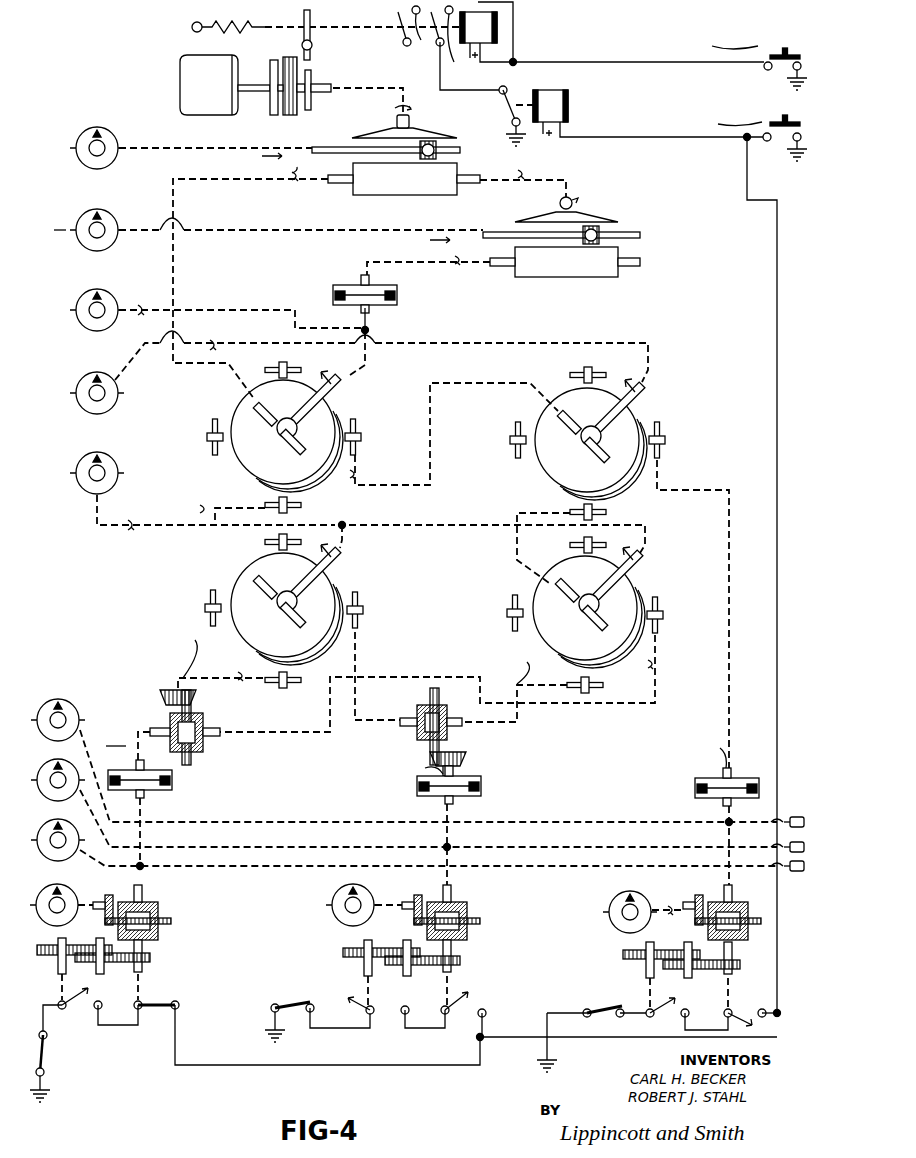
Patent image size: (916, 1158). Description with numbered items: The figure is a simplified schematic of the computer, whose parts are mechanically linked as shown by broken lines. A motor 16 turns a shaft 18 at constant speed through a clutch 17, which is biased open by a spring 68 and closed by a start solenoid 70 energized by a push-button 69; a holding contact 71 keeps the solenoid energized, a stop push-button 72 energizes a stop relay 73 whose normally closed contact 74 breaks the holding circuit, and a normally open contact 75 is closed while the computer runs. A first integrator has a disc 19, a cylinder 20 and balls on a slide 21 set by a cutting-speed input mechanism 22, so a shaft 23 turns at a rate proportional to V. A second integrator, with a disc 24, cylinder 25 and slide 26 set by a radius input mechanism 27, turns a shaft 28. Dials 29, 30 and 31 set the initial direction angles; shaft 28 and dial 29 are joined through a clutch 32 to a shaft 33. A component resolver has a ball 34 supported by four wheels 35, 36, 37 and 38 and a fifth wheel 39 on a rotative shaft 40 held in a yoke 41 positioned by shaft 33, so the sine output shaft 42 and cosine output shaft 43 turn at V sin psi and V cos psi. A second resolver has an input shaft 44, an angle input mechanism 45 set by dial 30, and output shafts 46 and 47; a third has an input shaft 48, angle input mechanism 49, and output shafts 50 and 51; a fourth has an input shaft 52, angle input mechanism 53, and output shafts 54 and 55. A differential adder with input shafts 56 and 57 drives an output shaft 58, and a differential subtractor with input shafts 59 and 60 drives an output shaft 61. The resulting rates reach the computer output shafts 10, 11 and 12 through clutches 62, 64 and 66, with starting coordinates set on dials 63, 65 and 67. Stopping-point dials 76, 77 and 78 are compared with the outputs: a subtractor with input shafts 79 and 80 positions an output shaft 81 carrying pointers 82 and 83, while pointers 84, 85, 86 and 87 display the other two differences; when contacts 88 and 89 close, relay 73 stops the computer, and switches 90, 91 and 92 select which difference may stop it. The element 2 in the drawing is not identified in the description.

The Z differential 2 is at (119, 932).
The computer output shaft 10 is at (790, 813).
The computer output shaft 11 is at (795, 839).
The output shaft 12 is at (794, 876).
The motor 16 is at (218, 95).
The clutch 17 is at (272, 108).
The shaft 18 is at (318, 84).
The disc 19 is at (417, 128).
The cylinder 20 is at (415, 196).
The slide 21 is at (489, 154).
The input mechanism 22 is at (111, 144).
The shaft 23 is at (338, 186).
The disc 24 is at (590, 216).
The cylinder 25 is at (582, 276).
The slide 26 is at (626, 236).
The input mechanism 27 is at (111, 226).
The shaft 28 is at (504, 268).
The dial 29 is at (111, 306).
The dial 30 is at (120, 376).
The dial 31 is at (100, 454).
The clutch 32 is at (352, 284).
The shaft 33 is at (362, 316).
The ball 34 is at (238, 480).
The wheel 35 is at (214, 426).
The wheel 36 is at (281, 368).
The wheel 37 is at (361, 438).
The wheel 38 is at (306, 511).
The fifth wheel 39 is at (286, 452).
The rotative shaft 40 is at (270, 442).
The yoke 41 is at (308, 415).
The sine output shaft 42 is at (272, 508).
The cosine output shaft 43 is at (363, 448).
The input shaft 44 is at (570, 438).
The angle input mechanism 45 is at (612, 422).
The sine output shaft 46 is at (604, 516).
The cosine output shaft 47 is at (665, 440).
The input shaft 48 is at (268, 606).
The angle input mechanism 49 is at (306, 588).
The sine output shaft 50 is at (283, 684).
The cosine output shaft 51 is at (360, 608).
The input shaft 52 is at (568, 612).
The angle input mechanism 53 is at (607, 590).
The sine output shaft 54 is at (572, 688).
The cosine output shaft 55 is at (660, 608).
The input shaft 56 is at (416, 710).
The input shaft 57 is at (445, 712).
The output shaft 58 is at (456, 754).
The input shaft 59 is at (175, 688).
The input shaft 60 is at (206, 748).
The output shaft 61 is at (164, 728).
The clutch 62 is at (708, 776).
The dial 63 is at (73, 714).
The clutch 64 is at (480, 796).
The dial 65 is at (84, 786).
The clutch 66 is at (162, 792).
The dial 67 is at (91, 840).
The spring 68 is at (234, 24).
The push-button 69 is at (774, 50).
The start solenoid 70 is at (499, 30).
The holding contact 71 is at (467, 48).
The push-button 72 is at (782, 122).
The stop relay 73 is at (548, 92).
The normally closed contact 74 is at (505, 114).
The normally open contact 75 is at (411, 37).
The dial 76 is at (614, 926).
The dial 77 is at (336, 922).
The dial 78 is at (67, 894).
The input shaft 79 is at (690, 918).
The input shaft 80 is at (734, 896).
The output shaft 81 is at (738, 954).
The pointer 82 is at (742, 1024).
The second pointer 83 is at (652, 1018).
The pointer 84 is at (464, 1002).
The pointer 85 is at (362, 1004).
The pointer 86 is at (146, 1014).
The pointer 87 is at (66, 1012).
The electrical contact 88 is at (768, 1010).
The electrical contact 89 is at (691, 1008).
The switch 90 is at (616, 1006).
The switch 91 is at (300, 1004).
The switch 92 is at (45, 1056).